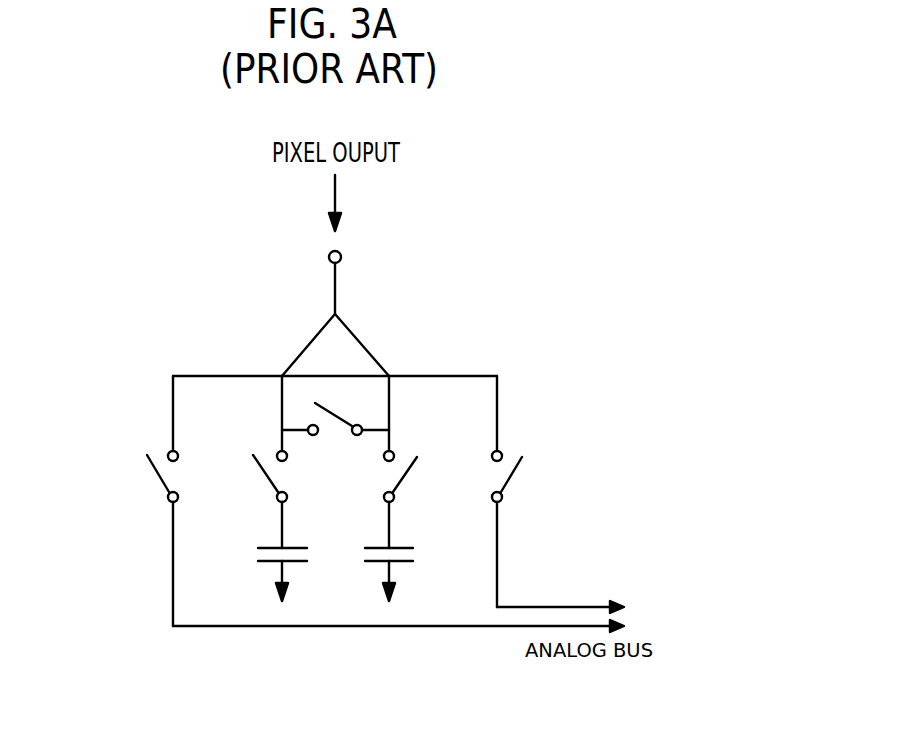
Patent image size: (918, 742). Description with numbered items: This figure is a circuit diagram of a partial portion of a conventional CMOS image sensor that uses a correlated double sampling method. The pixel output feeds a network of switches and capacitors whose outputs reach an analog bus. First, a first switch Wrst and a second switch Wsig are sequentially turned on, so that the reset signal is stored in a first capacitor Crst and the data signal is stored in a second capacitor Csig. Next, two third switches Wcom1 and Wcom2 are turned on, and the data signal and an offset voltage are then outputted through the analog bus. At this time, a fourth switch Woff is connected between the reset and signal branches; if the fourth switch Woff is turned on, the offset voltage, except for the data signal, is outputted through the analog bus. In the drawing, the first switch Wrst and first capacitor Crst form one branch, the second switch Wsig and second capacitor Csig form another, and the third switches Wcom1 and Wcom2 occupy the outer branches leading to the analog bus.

The third switch Wcom1 is at (119, 483).
The first switch Wrst is at (254, 481).
The fourth switch Woff is at (335, 411).
The second switch Wsig is at (418, 481).
The third switch Wcom2 is at (540, 481).
The first capacitor Crst is at (260, 551).
The second capacitor Csig is at (415, 551).